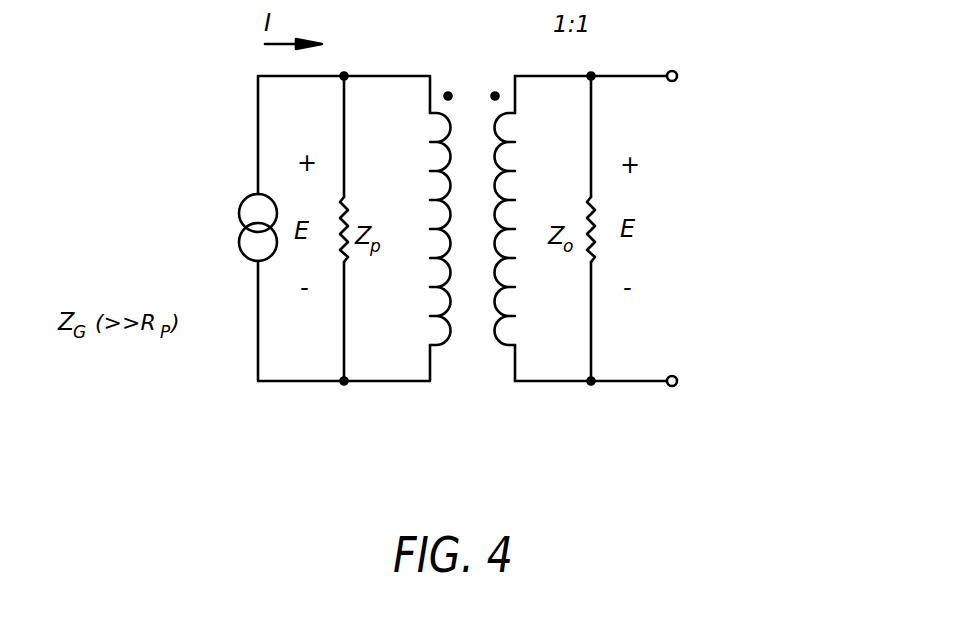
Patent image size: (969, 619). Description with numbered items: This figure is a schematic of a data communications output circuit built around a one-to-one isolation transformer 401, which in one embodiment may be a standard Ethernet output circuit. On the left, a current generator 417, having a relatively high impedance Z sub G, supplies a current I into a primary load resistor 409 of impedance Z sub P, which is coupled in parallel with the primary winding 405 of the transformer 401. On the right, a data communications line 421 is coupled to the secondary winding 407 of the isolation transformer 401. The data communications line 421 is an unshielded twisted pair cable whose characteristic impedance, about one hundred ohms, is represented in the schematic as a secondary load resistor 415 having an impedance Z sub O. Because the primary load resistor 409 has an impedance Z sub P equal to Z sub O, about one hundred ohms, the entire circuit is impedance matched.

The isolation transformer 401 is at (482, 288).
The primary winding 405 is at (435, 235).
The secondary winding 407 is at (537, 229).
The primary load resistor 409 is at (345, 222).
The secondary load resistor 415 is at (587, 208).
The current generator 417 is at (240, 242).
The data communications line 421 is at (700, 128).